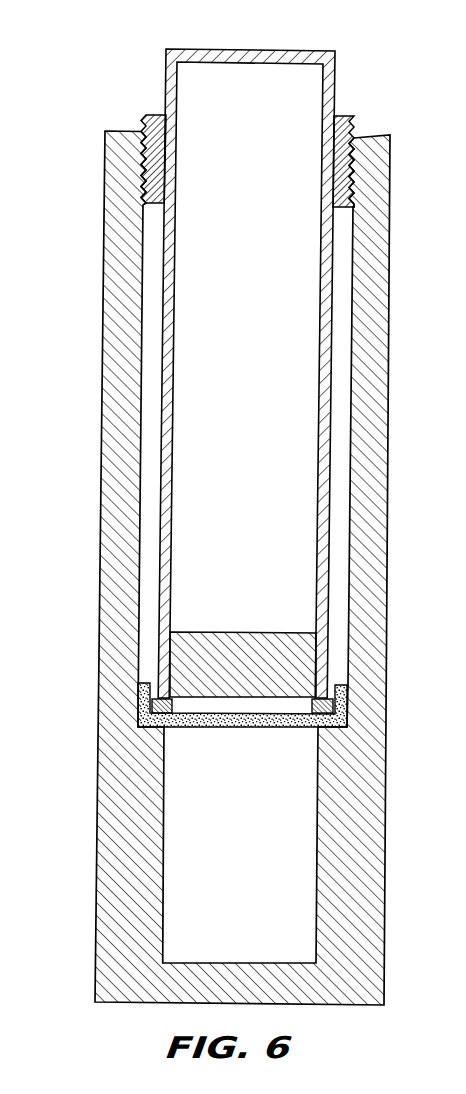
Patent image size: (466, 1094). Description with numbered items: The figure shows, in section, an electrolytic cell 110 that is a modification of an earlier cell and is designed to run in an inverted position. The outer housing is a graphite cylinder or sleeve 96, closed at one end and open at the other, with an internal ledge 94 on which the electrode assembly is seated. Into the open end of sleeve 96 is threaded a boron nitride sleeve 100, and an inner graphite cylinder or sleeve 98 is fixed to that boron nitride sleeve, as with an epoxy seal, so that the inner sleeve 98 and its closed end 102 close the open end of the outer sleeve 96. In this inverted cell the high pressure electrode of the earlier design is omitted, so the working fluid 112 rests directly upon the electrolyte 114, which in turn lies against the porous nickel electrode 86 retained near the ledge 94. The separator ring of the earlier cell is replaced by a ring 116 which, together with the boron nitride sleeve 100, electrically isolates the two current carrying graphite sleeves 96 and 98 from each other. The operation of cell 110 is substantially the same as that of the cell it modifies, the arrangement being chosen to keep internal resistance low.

The porous nickel electrode 86 is at (136, 718).
The ledge 94 is at (313, 727).
The graphite cylinder or sleeve 96 is at (94, 851).
The inner graphite cylinder or sleeve 98 is at (155, 316).
The boron nitride sleeve 100 is at (145, 115).
The closed end of inner sleeve 102 is at (247, 50).
The electrolytic cell 110 is at (100, 220).
The working fluid 112 is at (302, 656).
The electrolyte 114 is at (252, 702).
The ring 116 is at (138, 697).